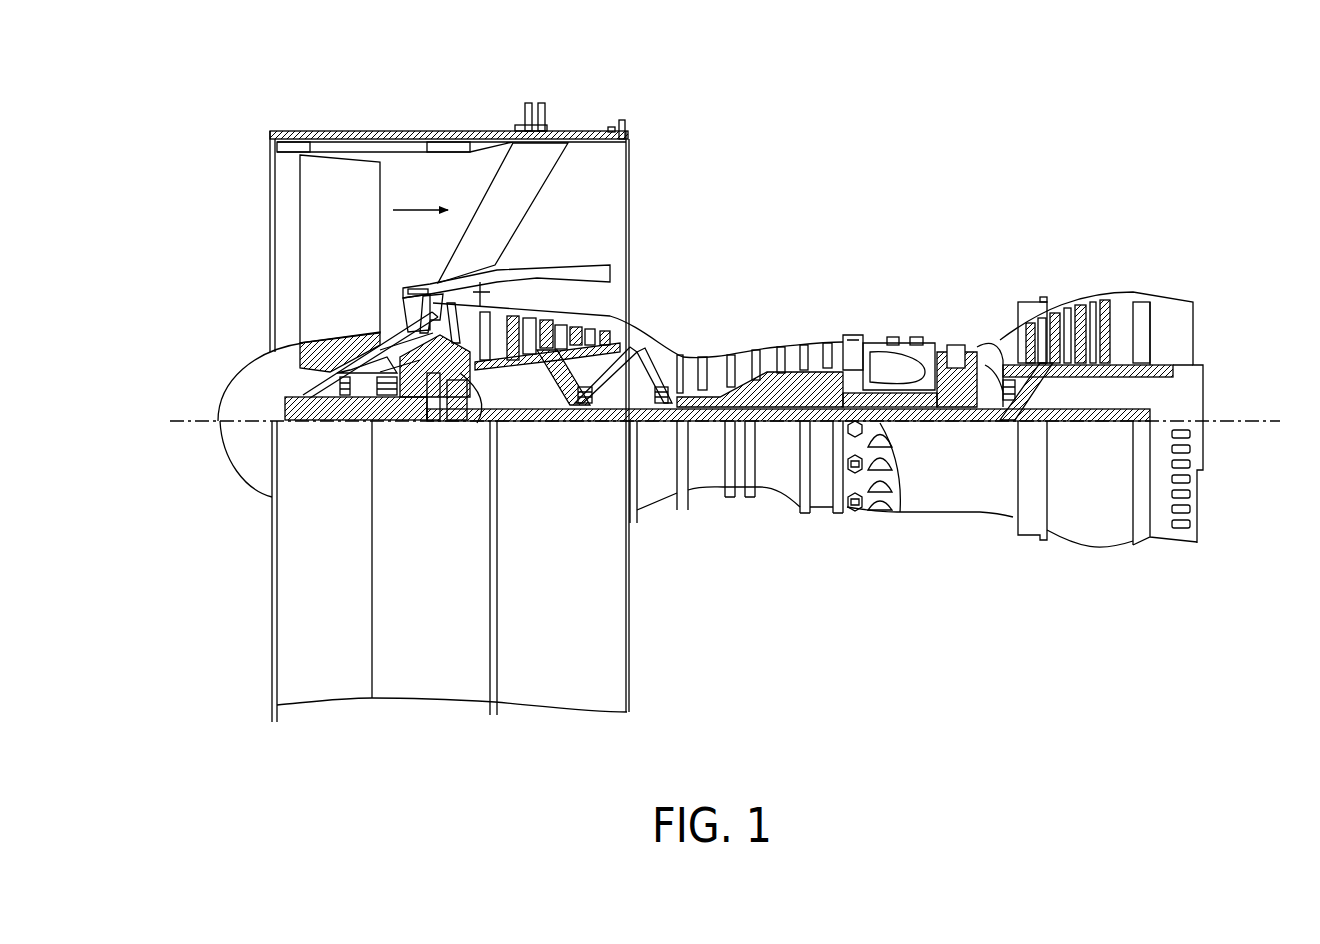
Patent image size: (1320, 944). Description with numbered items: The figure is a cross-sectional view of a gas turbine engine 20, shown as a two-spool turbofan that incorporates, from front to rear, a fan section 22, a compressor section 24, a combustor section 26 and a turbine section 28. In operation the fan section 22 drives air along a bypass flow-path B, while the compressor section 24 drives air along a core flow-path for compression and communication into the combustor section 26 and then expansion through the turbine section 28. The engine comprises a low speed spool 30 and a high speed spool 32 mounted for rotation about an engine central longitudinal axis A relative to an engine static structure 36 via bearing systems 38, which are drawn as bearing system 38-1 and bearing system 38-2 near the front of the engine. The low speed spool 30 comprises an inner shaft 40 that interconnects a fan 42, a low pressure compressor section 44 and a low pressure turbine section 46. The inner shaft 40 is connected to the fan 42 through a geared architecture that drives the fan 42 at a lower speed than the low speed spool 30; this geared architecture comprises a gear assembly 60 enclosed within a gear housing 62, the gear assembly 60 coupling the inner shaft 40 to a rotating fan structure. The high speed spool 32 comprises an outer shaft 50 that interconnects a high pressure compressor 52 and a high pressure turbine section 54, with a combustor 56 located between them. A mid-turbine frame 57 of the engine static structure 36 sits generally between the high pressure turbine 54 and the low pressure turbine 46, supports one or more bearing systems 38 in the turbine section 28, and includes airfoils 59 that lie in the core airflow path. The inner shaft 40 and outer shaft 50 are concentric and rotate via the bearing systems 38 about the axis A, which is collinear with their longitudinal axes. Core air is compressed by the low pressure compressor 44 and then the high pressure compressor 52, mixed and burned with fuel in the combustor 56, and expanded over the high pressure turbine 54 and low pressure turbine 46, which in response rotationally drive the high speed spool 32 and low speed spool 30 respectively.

The gas turbine engine 20 is at (937, 145).
The fan section 22 is at (470, 104).
The compressor section 24 is at (842, 222).
The combustor section 26 is at (938, 222).
The turbine section 28 is at (1130, 222).
The low speed spool 30 is at (785, 437).
The high speed spool 32 is at (828, 350).
The engine static structure 36 is at (243, 694).
The bearing system 38 is at (1015, 400).
The bearing system 38-1 is at (337, 425).
The bearing system 38-2 is at (578, 427).
The inner shaft 40 is at (645, 425).
The fan 42 is at (340, 265).
The low pressure compressor section 44 is at (563, 327).
The low pressure turbine section 46 is at (1085, 293).
The outer shaft 50 is at (898, 470).
The high pressure compressor 52 is at (777, 350).
The high pressure turbine section 54 is at (955, 345).
The combustor 56 is at (898, 345).
The mid-turbine frame 57 is at (998, 360).
The airfoils 59 is at (1035, 310).
The gear assembly 60 is at (432, 427).
The gear housing 62 is at (462, 425).
The engine central longitudinal axis A is at (203, 421).
The bypass flow-path B is at (423, 220).